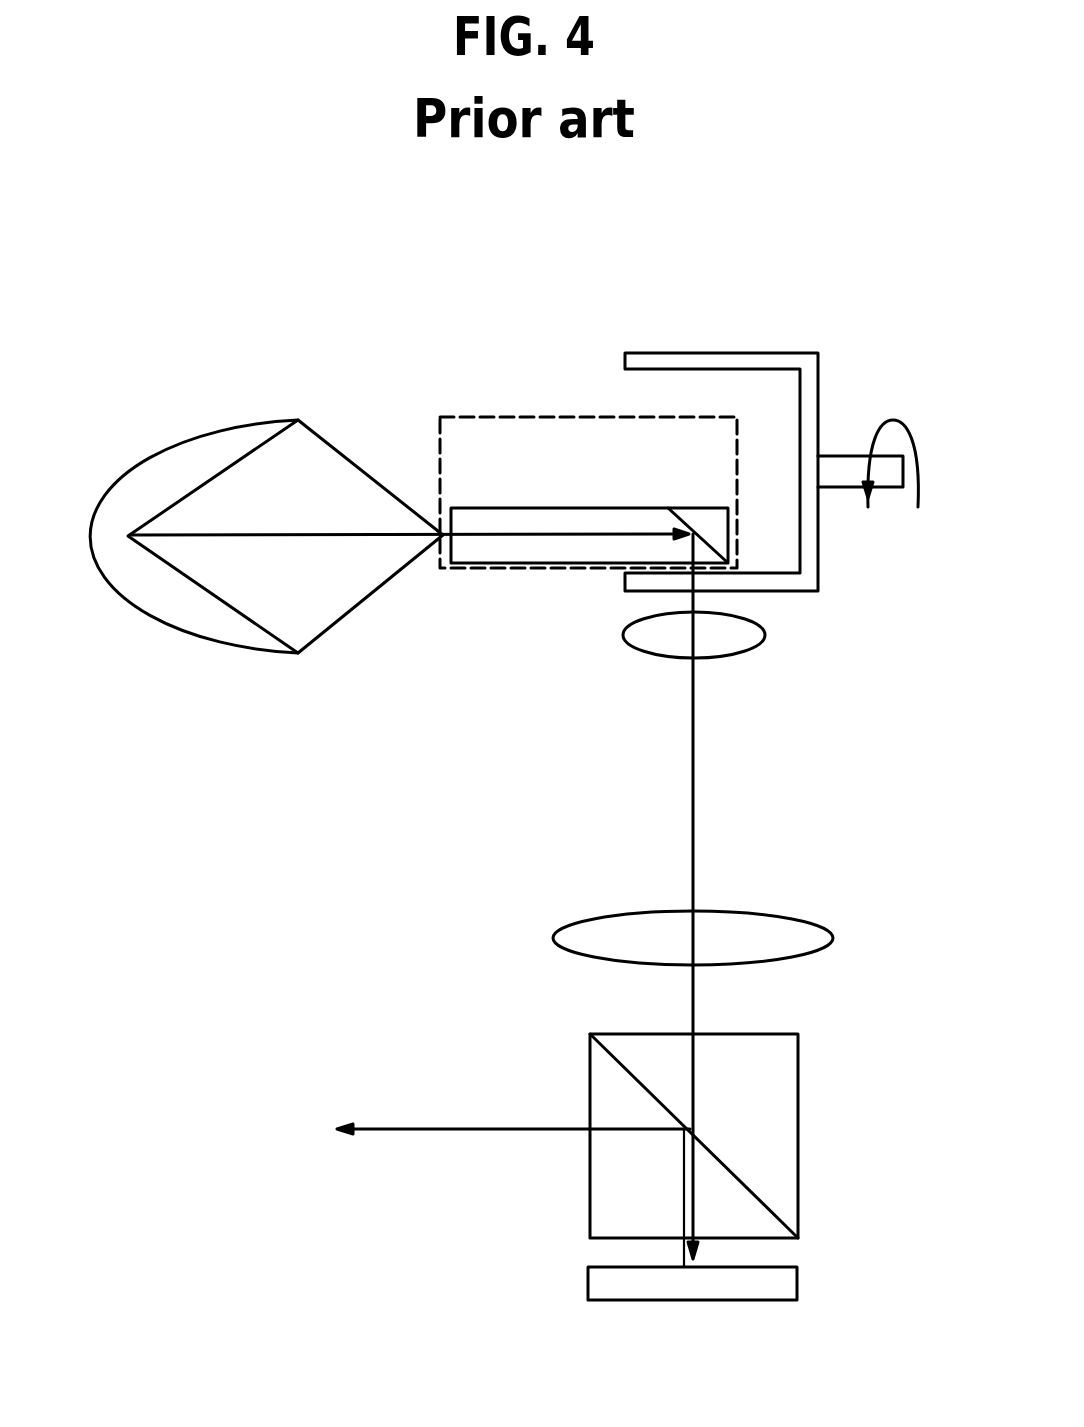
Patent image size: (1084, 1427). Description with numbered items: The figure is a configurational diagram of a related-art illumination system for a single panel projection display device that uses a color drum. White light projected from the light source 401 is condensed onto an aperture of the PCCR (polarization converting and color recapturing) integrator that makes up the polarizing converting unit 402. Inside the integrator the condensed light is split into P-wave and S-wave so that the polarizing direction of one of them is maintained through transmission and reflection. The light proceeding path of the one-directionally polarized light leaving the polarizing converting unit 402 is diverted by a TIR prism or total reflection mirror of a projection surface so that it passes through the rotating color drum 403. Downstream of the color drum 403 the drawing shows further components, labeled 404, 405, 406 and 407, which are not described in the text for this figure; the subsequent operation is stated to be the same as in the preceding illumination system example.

The light source 401 is at (213, 648).
The polarizing converting unit 402 is at (492, 570).
The color drum 403 is at (774, 472).
The condenser lens 404 is at (720, 657).
The relay lens 405 is at (767, 912).
The polarization beam splitter 406 is at (798, 1133).
The LCD panel 407 is at (787, 1287).